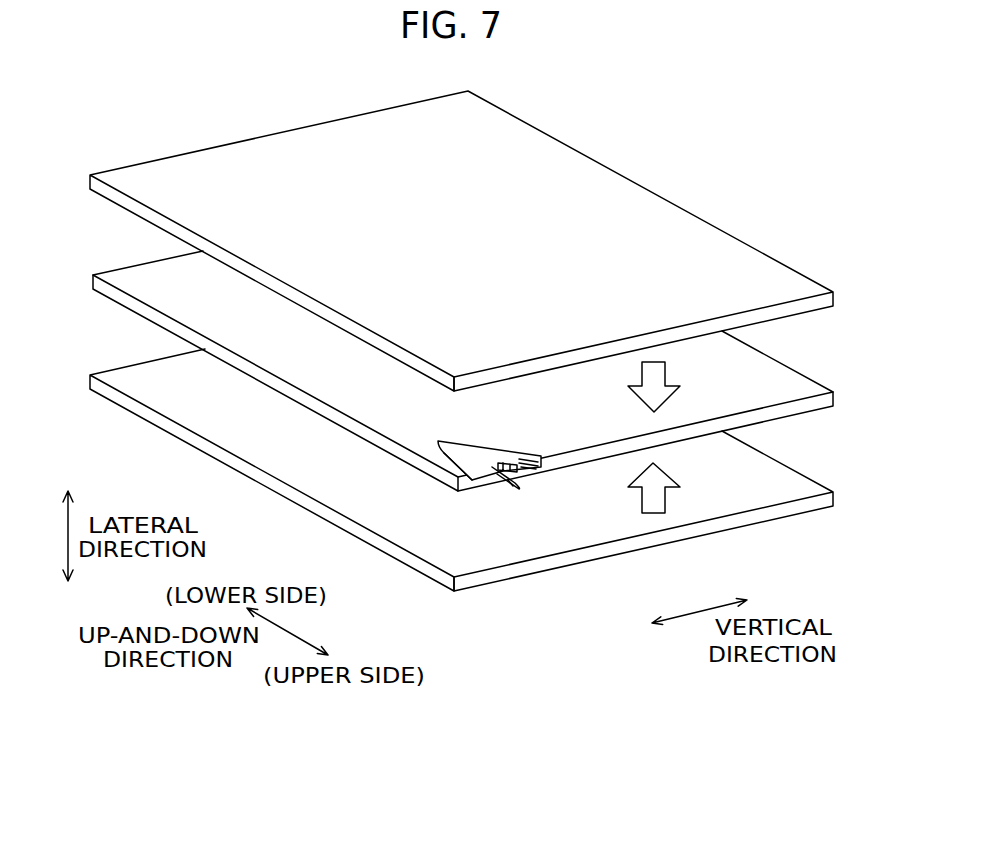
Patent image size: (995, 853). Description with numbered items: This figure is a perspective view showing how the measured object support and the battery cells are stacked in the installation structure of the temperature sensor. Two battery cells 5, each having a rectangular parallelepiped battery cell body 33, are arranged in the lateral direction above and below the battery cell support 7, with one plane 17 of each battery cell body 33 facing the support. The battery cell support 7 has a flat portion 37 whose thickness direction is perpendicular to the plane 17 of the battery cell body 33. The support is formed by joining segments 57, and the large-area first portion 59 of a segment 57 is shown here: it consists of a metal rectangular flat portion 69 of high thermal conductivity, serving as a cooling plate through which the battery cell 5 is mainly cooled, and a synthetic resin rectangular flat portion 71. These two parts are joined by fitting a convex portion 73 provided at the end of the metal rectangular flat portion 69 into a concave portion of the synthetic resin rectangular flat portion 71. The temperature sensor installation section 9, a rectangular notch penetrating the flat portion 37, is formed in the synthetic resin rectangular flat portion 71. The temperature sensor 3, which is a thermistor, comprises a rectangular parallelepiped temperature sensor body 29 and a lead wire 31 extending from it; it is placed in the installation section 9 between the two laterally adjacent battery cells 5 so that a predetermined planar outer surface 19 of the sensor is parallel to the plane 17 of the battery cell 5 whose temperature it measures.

The battery cell 5 is at (637, 198).
The battery cell body 33 is at (525, 141).
The one plane of the battery cell 17 is at (460, 358).
The battery cell support 7 is at (475, 352).
The flat portion 37 is at (790, 382).
The segment 57 is at (138, 273).
The first portion 59 is at (157, 295).
The synthetic resin rectangular flat portion 71 is at (318, 387).
The metal rectangular flat portion 69 is at (753, 353).
The temperature sensor installation section 9 is at (455, 448).
The planar outer surface of the temperature sensor 19 is at (483, 462).
The convex portion 73 is at (528, 471).
The temperature sensor 3 is at (462, 478).
The lead wire 31 is at (507, 488).
The temperature sensor body 29 is at (458, 472).